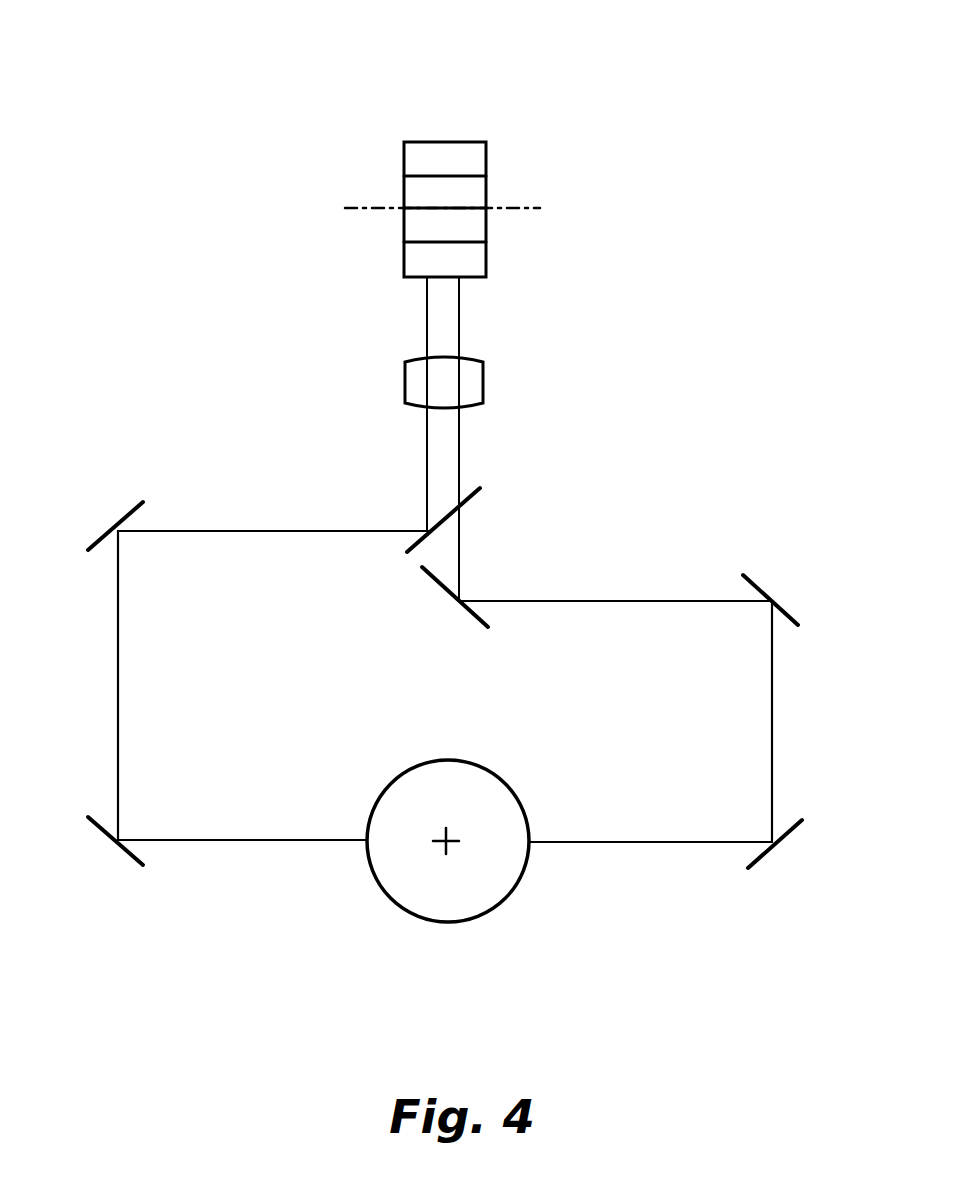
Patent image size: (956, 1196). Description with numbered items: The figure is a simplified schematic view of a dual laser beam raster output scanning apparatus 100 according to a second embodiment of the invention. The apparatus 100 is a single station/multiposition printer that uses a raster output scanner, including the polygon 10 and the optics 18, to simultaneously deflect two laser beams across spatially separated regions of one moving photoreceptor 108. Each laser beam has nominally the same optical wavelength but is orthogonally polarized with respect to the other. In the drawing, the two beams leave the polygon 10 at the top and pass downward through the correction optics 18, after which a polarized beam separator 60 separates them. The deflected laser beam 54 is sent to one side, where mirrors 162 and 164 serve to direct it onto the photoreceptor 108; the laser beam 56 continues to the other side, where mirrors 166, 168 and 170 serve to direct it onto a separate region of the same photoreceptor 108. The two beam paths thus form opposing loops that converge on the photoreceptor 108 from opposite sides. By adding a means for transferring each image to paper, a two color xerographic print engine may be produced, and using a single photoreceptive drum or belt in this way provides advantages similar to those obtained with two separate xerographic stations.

The apparatus 100 is at (658, 65).
The polygon 10 is at (447, 148).
The laser beam 54 is at (428, 333).
The laser beam 56 is at (460, 328).
The optics 18 is at (482, 385).
The polarized beam separator 60 is at (472, 498).
The mirror 162 is at (132, 508).
The mirror 164 is at (100, 827).
The mirror 166 is at (442, 580).
The mirror 168 is at (755, 580).
The mirror 170 is at (795, 828).
The photoreceptor 108 is at (503, 778).